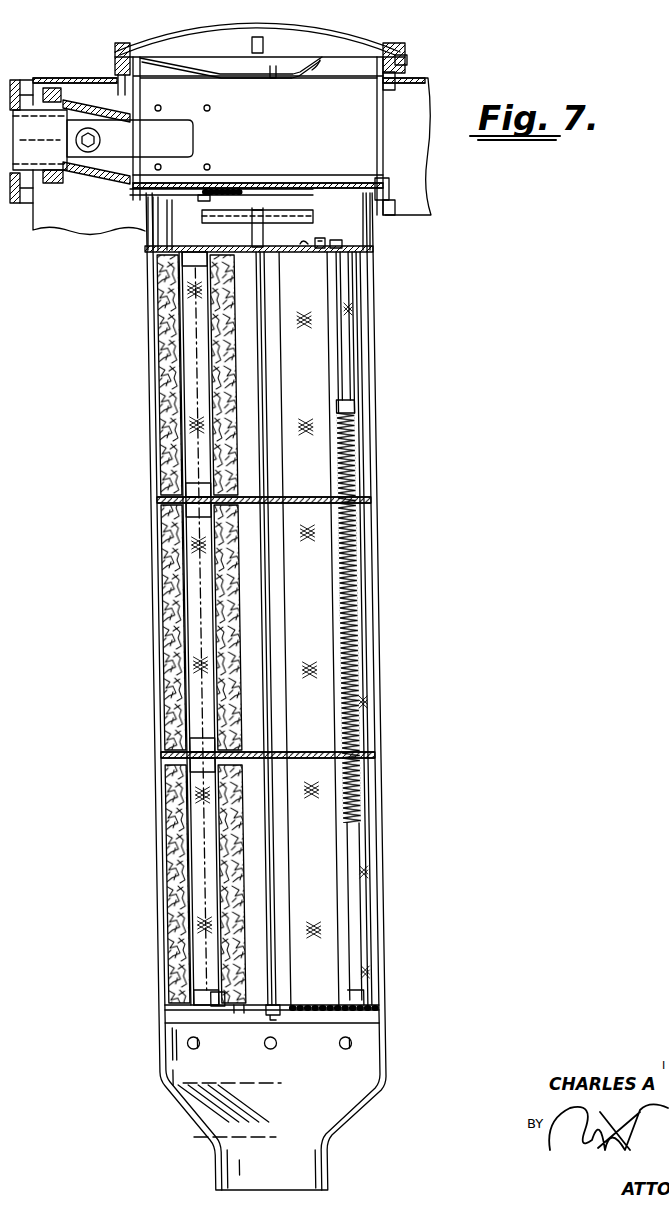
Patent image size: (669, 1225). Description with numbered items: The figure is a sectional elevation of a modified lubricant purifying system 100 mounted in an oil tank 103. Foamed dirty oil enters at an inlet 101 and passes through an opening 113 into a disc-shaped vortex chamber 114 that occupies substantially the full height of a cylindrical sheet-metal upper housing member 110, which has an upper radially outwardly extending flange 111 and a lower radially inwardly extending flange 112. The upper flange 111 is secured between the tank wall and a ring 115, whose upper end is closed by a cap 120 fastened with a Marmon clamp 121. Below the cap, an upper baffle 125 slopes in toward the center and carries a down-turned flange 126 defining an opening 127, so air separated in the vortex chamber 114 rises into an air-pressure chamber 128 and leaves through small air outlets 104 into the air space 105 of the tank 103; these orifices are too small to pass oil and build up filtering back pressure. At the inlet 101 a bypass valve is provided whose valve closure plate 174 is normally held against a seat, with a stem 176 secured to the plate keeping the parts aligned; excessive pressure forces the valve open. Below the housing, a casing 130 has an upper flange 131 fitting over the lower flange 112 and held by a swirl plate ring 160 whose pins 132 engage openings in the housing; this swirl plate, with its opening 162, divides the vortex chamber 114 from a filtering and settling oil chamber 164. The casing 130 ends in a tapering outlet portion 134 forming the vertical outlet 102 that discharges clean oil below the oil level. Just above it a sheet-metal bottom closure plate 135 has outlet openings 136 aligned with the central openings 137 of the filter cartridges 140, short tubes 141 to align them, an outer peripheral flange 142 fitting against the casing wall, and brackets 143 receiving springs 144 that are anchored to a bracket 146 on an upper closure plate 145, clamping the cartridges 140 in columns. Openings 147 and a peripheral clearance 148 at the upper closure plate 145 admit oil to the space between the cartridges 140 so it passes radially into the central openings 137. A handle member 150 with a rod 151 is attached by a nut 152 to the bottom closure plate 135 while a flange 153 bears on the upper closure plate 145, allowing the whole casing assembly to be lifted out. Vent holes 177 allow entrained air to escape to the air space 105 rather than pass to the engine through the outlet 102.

The lubricant purifying system 100 is at (383, 368).
The inlet 101 is at (72, 176).
The vertical outlet 102 is at (306, 1173).
The oil tank 103 is at (40, 228).
The air outlets 104 is at (114, 70).
The air space 105 is at (108, 102).
The upper housing member 110 is at (384, 138).
The upper radially outwardly extending flange 111 is at (397, 75).
The lower radially inwardly extending flange 112 is at (396, 208).
The opening 113 is at (174, 145).
The vortex chamber 114 is at (318, 136).
The ring 115 is at (406, 55).
The cap 120 is at (338, 29).
The Marmon clamp 121 is at (408, 62).
The upper baffle 125 is at (318, 78).
The down-turned flange 126 is at (216, 79).
The opening 127 is at (274, 80).
The air-pressure chamber 128 is at (184, 32).
The casing 130 is at (380, 519).
The upper flange 131 is at (390, 192).
The pins 132 is at (262, 180).
The outlet portion 134 is at (360, 1118).
The bottom closure plate 135 is at (244, 1018).
The outlet openings 136 is at (212, 1010).
The central openings 137 is at (175, 520).
The filter cartridges 140 is at (165, 440).
The short tubes 141 is at (165, 1004).
The outer peripheral flange 142 is at (160, 1017).
The brackets 143 is at (382, 993).
The springs 144 is at (360, 819).
The upper closure plate 145 is at (186, 247).
The bracket 146 is at (322, 255).
The openings 147 is at (304, 244).
The peripheral clearance 148 is at (145, 248).
The handle member 150 is at (300, 216).
The rod 151 is at (268, 580).
The nut 152 is at (268, 1022).
The flange 153 is at (250, 240).
The swirl plate ring 160 is at (198, 195).
The opening 162 is at (266, 197).
The filtering and settling oil chamber 164 is at (372, 222).
The valve closure plate 174 is at (100, 137).
The stem 176 is at (77, 143).
The vent holes 177 is at (187, 1045).